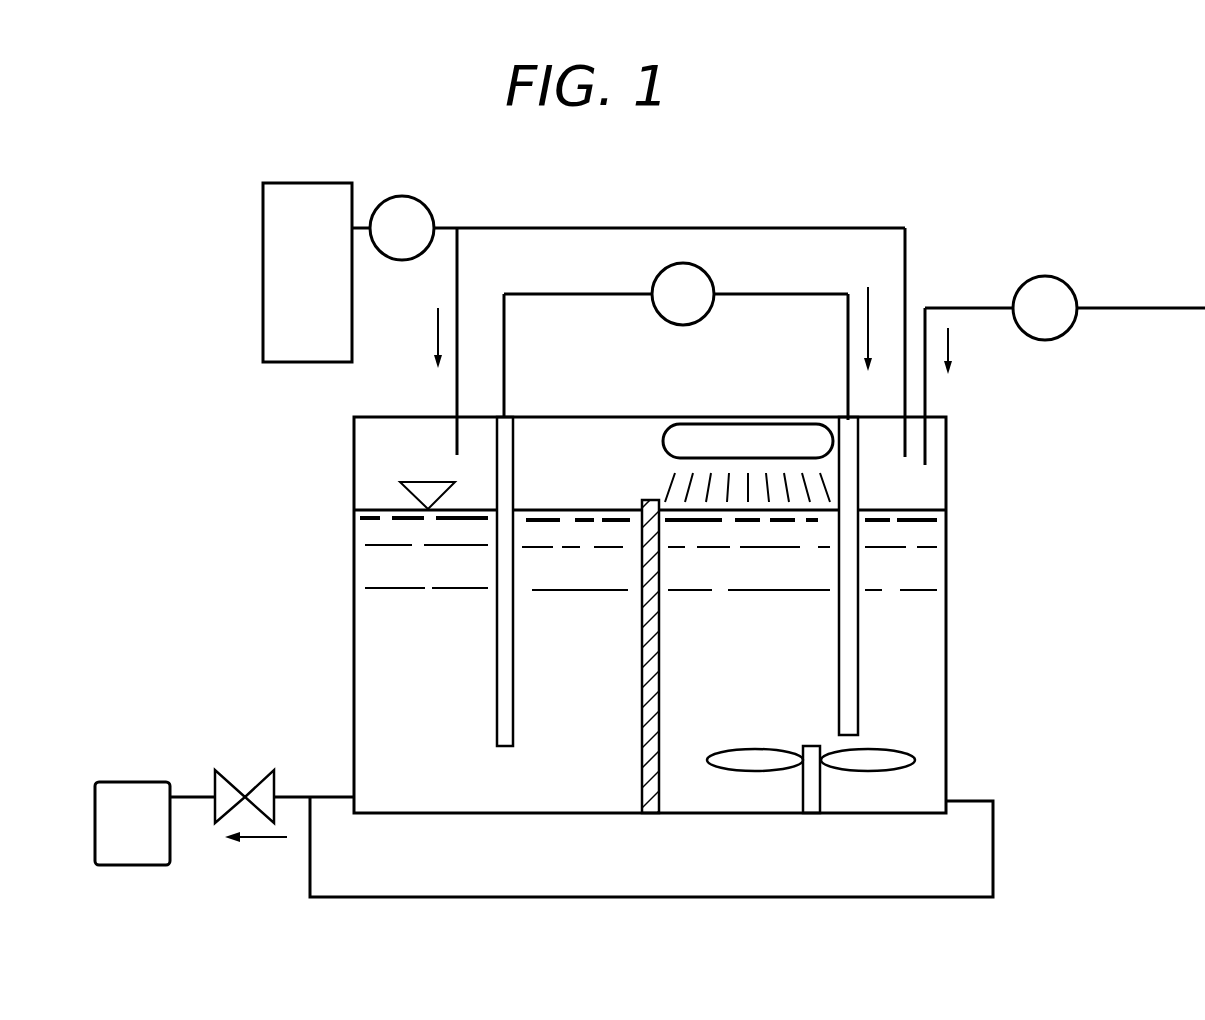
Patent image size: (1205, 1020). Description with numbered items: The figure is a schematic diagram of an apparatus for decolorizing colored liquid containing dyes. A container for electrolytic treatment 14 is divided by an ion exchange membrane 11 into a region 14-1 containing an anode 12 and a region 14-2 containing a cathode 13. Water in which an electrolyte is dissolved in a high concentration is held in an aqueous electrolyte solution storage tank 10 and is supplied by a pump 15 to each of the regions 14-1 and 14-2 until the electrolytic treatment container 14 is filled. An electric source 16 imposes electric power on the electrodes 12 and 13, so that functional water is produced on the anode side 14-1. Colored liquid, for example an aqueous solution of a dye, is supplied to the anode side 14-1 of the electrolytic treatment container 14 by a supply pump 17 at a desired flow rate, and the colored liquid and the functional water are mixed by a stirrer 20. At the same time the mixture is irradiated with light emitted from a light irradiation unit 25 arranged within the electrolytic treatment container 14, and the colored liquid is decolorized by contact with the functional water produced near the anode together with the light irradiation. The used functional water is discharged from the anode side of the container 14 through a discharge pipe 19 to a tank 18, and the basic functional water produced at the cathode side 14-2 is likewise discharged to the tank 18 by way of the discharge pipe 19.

The aqueous electrolyte solution storage tank 10 is at (330, 182).
The ion exchange membrane 11 is at (659, 690).
The anode 12 is at (858, 690).
The cathode 13 is at (513, 688).
The container for electrolytic treatment 14 is at (948, 628).
The region containing an anode 14-1 is at (933, 569).
The region containing a cathode 14-2 is at (370, 652).
The pump 15 is at (427, 204).
The electric source 16 is at (711, 274).
The supply pump 17 is at (1060, 280).
The tank 18 is at (150, 782).
The discharge pipe 19 is at (335, 795).
The stirrer 20 is at (915, 762).
The light irradiation unit 25 is at (750, 424).